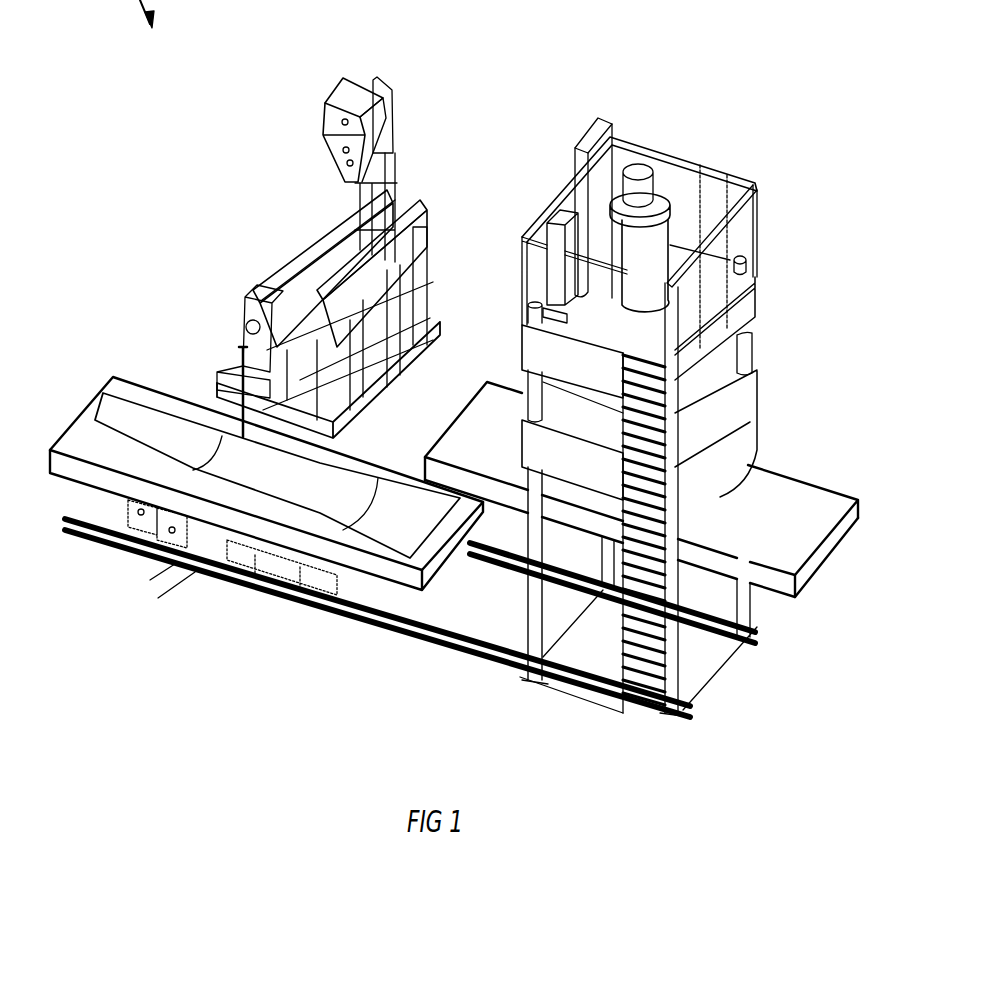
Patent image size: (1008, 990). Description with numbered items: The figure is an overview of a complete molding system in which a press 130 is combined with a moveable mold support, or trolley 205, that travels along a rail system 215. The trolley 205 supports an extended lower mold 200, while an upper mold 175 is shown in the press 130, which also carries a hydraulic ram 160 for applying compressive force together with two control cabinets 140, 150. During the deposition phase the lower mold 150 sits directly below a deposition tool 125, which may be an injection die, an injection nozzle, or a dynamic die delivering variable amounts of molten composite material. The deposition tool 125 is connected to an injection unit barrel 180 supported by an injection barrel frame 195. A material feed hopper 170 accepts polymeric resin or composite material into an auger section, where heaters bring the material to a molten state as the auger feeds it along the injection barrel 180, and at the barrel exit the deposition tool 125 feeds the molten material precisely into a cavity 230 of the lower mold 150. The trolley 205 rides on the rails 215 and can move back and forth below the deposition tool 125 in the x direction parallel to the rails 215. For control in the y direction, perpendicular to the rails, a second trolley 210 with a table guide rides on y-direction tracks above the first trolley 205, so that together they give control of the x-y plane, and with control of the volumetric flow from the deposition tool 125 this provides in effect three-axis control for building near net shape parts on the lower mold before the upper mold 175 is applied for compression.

The deposition tool 125 is at (233, 373).
The press 130 is at (482, 199).
The control cabinet 140 is at (562, 213).
The lower mold 150 is at (80, 437).
The hydraulic ram 160 is at (662, 192).
The material feed hopper 170 is at (342, 83).
The upper mold 175 is at (772, 590).
The injection unit barrel 180 is at (310, 227).
The injection barrel frame 195 is at (410, 260).
The extended lower mold 200 is at (225, 517).
The moveable mold support (trolley) 205 is at (173, 560).
The second trolley 210 is at (260, 547).
The rail system 215 is at (430, 640).
The cavity 230 is at (188, 433).